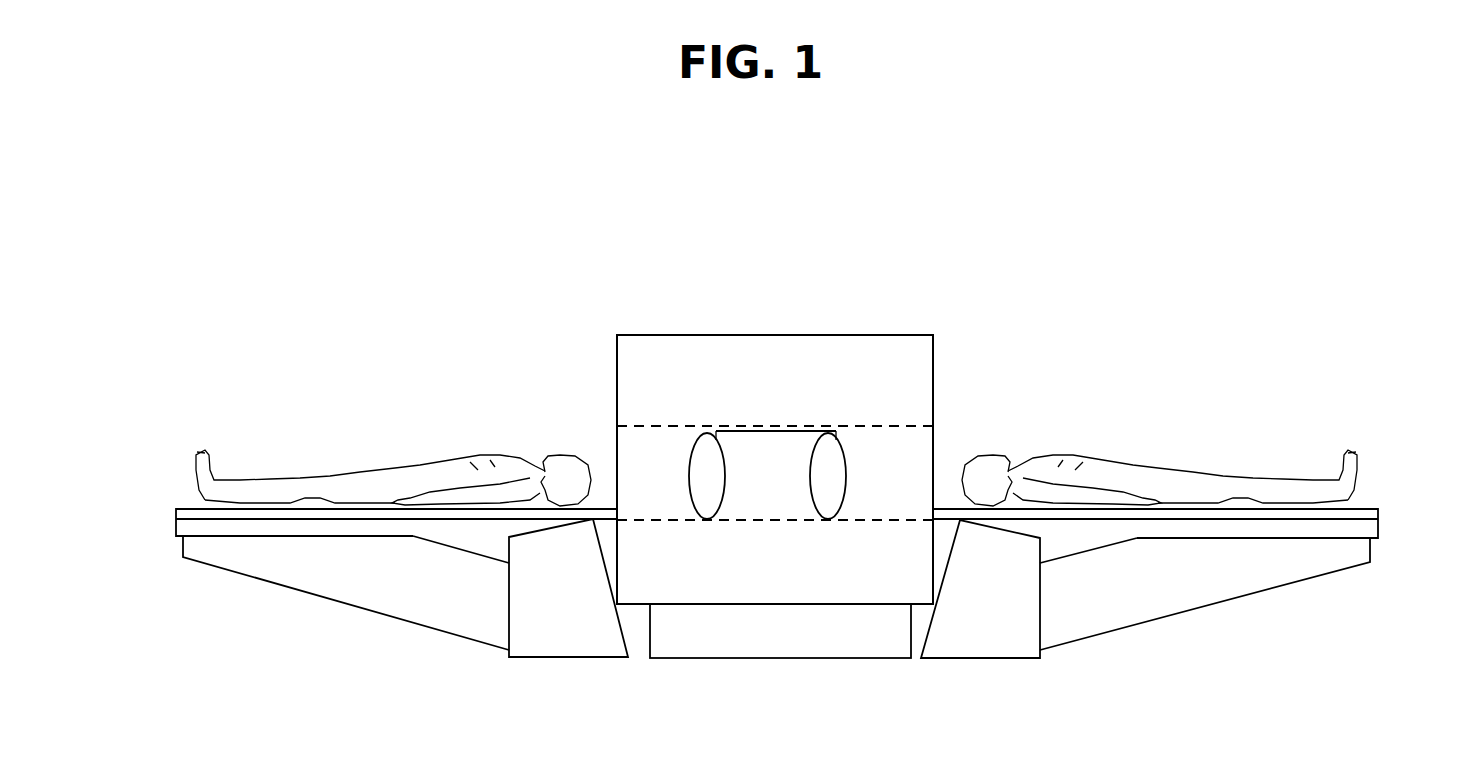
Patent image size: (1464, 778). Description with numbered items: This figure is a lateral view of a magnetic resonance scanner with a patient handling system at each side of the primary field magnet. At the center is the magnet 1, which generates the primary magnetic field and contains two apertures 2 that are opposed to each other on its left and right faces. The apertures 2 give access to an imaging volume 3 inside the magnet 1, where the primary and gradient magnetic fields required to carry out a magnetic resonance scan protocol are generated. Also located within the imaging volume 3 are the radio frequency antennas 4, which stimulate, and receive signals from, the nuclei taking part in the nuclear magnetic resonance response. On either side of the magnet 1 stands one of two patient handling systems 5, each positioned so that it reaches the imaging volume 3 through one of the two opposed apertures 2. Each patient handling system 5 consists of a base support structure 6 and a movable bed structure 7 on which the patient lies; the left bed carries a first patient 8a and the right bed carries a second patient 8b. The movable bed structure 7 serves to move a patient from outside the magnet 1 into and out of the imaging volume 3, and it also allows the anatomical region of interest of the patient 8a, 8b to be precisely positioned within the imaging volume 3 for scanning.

The magnet 1 is at (657, 343).
The apertures 2 is at (606, 429).
The imaging volume 3 is at (757, 440).
The radio frequency antennas 4 is at (818, 481).
The patient handling systems 5 is at (233, 586).
The base support structure 6 is at (350, 592).
The movable bed structure 7 is at (176, 508).
The patient 8a is at (427, 473).
The patient 8b is at (1192, 492).